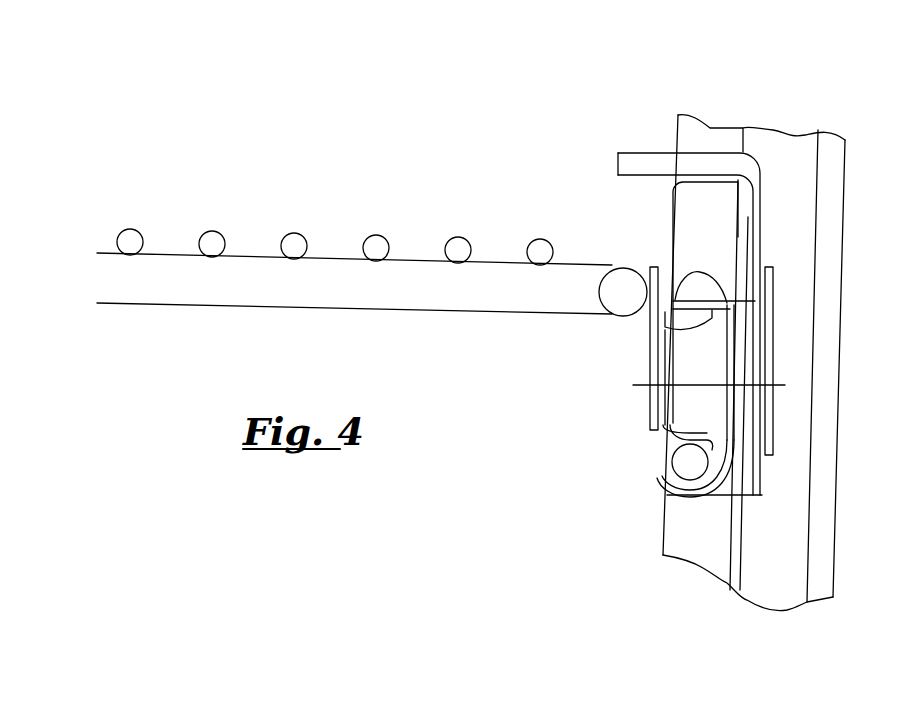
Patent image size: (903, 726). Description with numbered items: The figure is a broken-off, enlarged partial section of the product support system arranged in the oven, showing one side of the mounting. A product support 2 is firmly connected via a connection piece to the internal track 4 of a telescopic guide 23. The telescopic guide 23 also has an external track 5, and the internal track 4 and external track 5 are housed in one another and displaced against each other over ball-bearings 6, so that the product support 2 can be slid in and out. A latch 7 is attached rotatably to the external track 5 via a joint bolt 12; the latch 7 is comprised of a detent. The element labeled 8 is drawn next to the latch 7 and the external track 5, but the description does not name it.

The product support 2 is at (185, 275).
The internal track 4 is at (657, 425).
The external track 5 is at (675, 480).
The ball-bearings 6 is at (672, 472).
The latch 7 is at (645, 155).
The clip profile 8 is at (673, 223).
The joint bolt 12 is at (785, 348).
The telescopic guide 23 is at (702, 405).